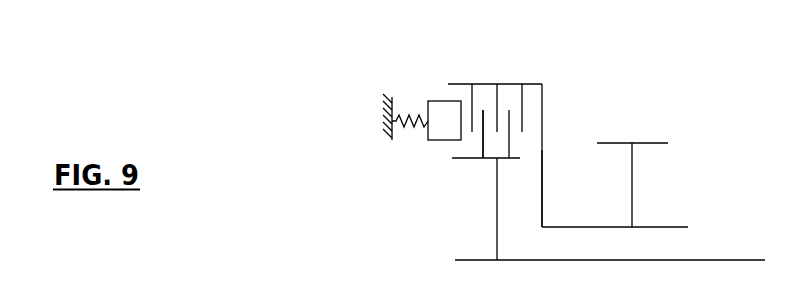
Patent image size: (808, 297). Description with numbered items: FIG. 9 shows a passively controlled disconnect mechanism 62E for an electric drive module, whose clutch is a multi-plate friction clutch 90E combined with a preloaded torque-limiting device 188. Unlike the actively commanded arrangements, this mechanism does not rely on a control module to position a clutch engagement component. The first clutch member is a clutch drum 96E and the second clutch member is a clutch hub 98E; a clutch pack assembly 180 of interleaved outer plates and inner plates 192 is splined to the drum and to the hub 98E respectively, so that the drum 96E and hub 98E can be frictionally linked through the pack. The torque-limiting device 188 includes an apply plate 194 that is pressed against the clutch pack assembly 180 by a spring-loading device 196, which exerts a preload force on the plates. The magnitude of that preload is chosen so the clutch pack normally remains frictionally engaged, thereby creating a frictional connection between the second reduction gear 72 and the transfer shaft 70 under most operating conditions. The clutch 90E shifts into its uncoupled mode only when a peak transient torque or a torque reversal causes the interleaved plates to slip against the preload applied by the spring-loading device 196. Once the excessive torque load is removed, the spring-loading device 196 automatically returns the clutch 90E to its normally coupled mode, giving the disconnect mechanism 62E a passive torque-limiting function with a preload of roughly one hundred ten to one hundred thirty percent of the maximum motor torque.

The passively controlled disconnect mechanism 62E is at (663, 71).
The multi-plate friction clutch 90E is at (566, 108).
The actuator 180 is at (495, 97).
The inner plates 192 is at (485, 141).
The clutch hub 98E is at (492, 226).
The clutch drum 96E is at (543, 193).
The second reduction gear 72 is at (615, 143).
The transfer shaft 70 is at (723, 260).
The apply plate 194 is at (448, 101).
The preloaded torque-limiting device 188 is at (427, 146).
The spring-loading device 196 is at (405, 116).